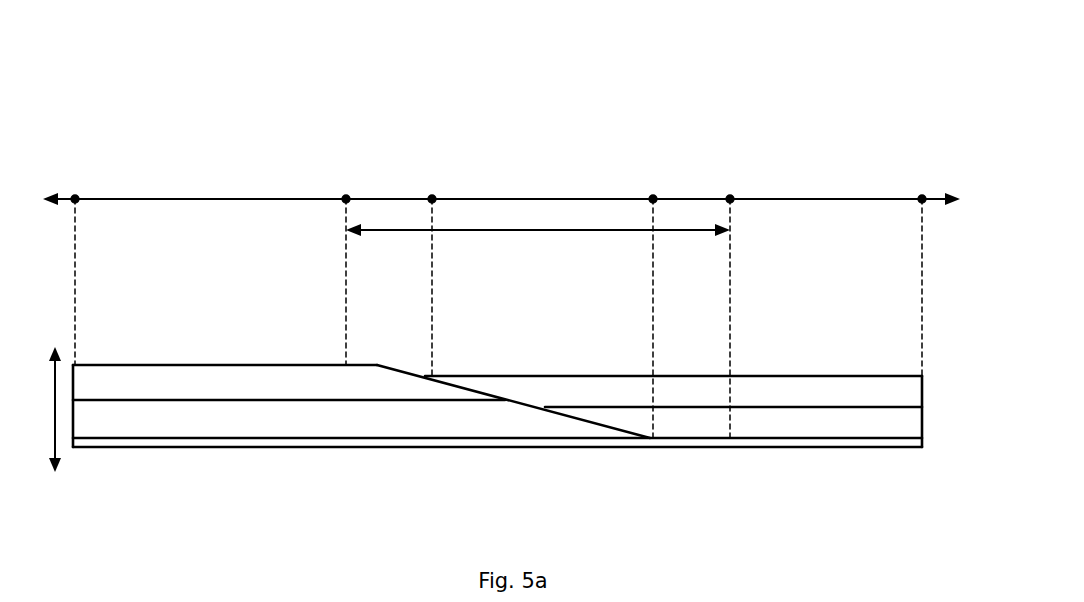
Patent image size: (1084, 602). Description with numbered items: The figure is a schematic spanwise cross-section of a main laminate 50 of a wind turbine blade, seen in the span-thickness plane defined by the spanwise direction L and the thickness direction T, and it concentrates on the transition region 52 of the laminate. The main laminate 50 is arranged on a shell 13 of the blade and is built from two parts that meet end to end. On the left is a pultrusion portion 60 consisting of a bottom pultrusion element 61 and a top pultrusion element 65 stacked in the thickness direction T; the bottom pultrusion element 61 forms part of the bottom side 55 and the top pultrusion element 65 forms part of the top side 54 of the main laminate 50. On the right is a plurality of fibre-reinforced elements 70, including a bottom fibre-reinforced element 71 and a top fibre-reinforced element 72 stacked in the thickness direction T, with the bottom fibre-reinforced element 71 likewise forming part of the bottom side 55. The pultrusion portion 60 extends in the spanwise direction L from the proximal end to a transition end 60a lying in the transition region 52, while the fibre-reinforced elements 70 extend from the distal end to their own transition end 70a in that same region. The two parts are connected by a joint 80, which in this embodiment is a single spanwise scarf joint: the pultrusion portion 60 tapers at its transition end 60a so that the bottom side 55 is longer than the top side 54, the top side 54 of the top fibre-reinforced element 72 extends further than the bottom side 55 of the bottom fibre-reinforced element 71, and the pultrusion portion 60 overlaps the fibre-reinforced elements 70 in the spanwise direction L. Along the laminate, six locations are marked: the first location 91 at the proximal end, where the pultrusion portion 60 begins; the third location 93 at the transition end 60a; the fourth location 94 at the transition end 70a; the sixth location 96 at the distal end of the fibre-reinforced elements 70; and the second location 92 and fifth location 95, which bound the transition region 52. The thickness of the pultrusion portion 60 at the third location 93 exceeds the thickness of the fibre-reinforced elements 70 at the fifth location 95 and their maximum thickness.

The spanwise direction L is at (203, 199).
The thickness direction T is at (58, 455).
The main laminate 50 is at (415, 253).
The transition region 52 is at (556, 230).
The top side 54 is at (325, 365).
The bottom side 55 is at (235, 435).
The pultrusion portion 60 is at (230, 330).
The transition end 60a is at (480, 390).
The bottom pultrusion element 61 is at (145, 428).
The top pultrusion element 65 is at (172, 378).
The plurality of fibre-reinforced elements 70 is at (748, 340).
The transition end 70a is at (573, 417).
The bottom fibre-reinforced element 71 is at (812, 432).
The top fibre-reinforced element 72 is at (833, 392).
The joint 80 is at (452, 378).
The shell 13 is at (690, 445).
The first location 91 is at (75, 199).
The second location 92 is at (346, 199).
The third location 93 is at (653, 199).
The fourth location 94 is at (432, 199).
The fifth location 95 is at (730, 199).
The sixth location 96 is at (922, 199).